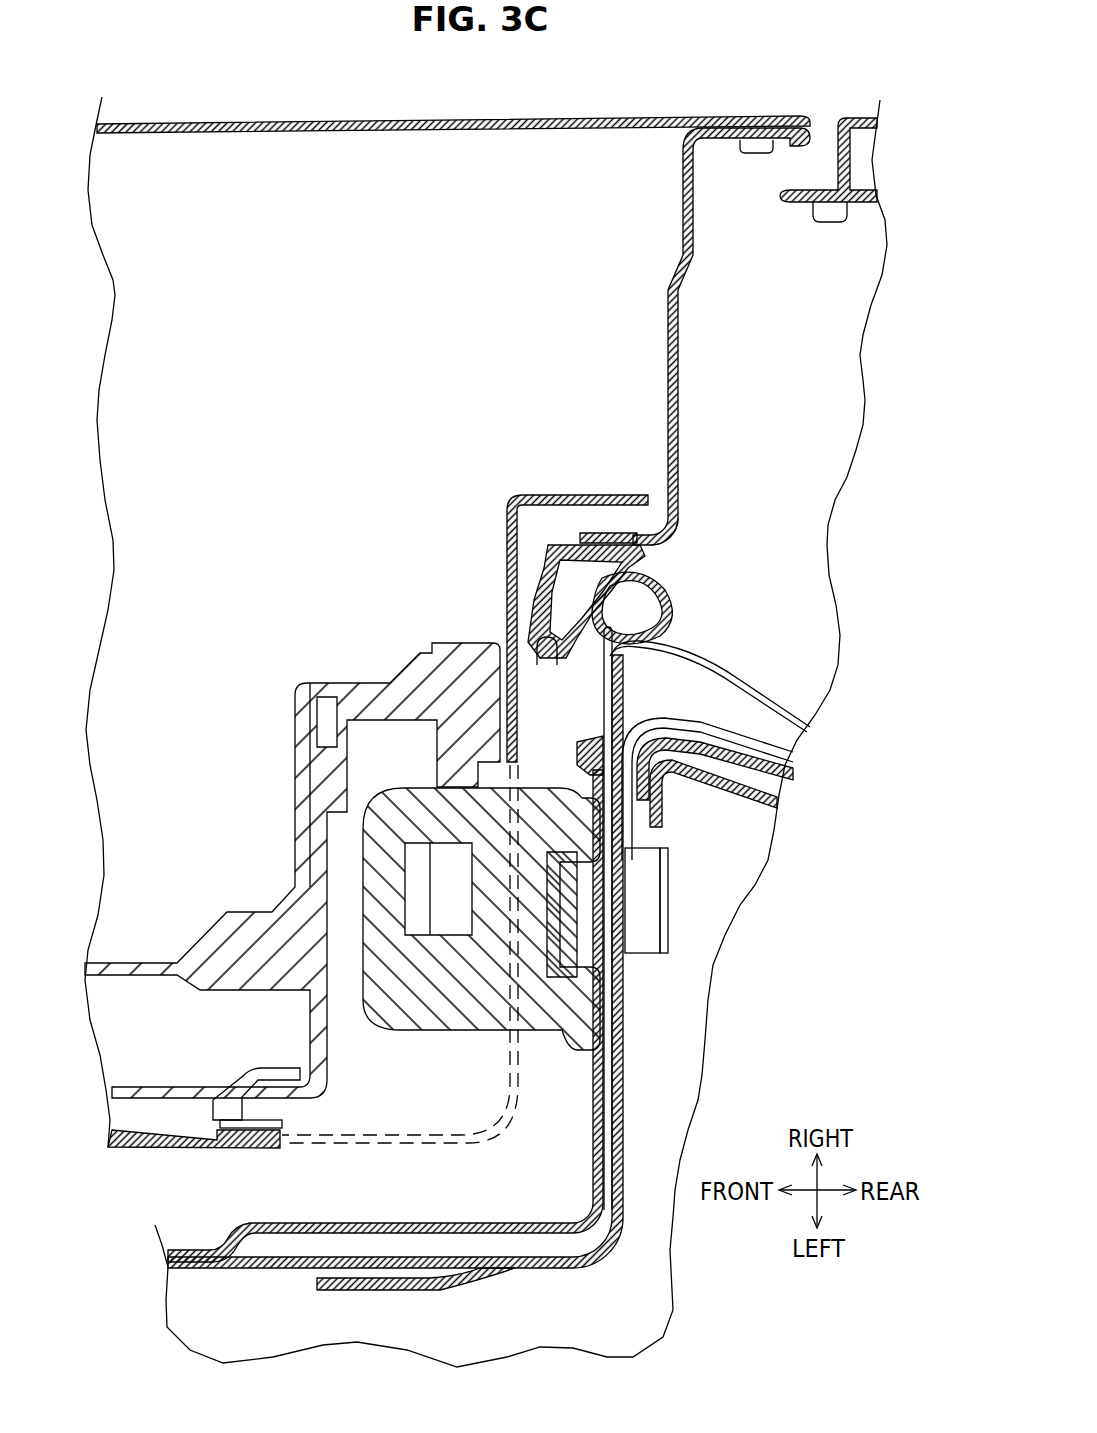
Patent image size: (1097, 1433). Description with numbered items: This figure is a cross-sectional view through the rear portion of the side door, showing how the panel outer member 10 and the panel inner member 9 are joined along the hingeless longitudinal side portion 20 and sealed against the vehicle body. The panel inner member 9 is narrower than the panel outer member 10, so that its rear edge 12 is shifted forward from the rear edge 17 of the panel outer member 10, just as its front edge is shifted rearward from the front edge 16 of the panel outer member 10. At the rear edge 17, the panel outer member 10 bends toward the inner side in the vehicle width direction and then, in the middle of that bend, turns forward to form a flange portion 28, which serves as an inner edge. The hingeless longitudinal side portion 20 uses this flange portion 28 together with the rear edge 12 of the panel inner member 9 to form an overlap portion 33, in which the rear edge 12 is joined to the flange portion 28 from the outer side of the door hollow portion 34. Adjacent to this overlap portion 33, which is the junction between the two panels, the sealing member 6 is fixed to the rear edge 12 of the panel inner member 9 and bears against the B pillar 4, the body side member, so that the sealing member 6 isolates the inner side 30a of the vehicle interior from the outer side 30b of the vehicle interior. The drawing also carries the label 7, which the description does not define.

The door hollow portion 34 is at (398, 366).
The rear edge of the panel outer member 17 is at (748, 153).
The panel outer member 10 is at (678, 333).
The hingeless longitudinal side portion 20 is at (721, 336).
The outer side of the vehicle interior 30b is at (800, 413).
The flange portion 28 is at (595, 530).
The overlap portion 33 is at (614, 526).
The front edge of the panel outer member 16 is at (676, 522).
The rear edge of the panel inner member 12 is at (640, 560).
The sealing member 6 is at (670, 600).
The panel inner member 9 is at (537, 642).
The B pillar 4 is at (757, 690).
The inner side of the vehicle interior 30a is at (600, 717).
The cover 7 is at (175, 1150).